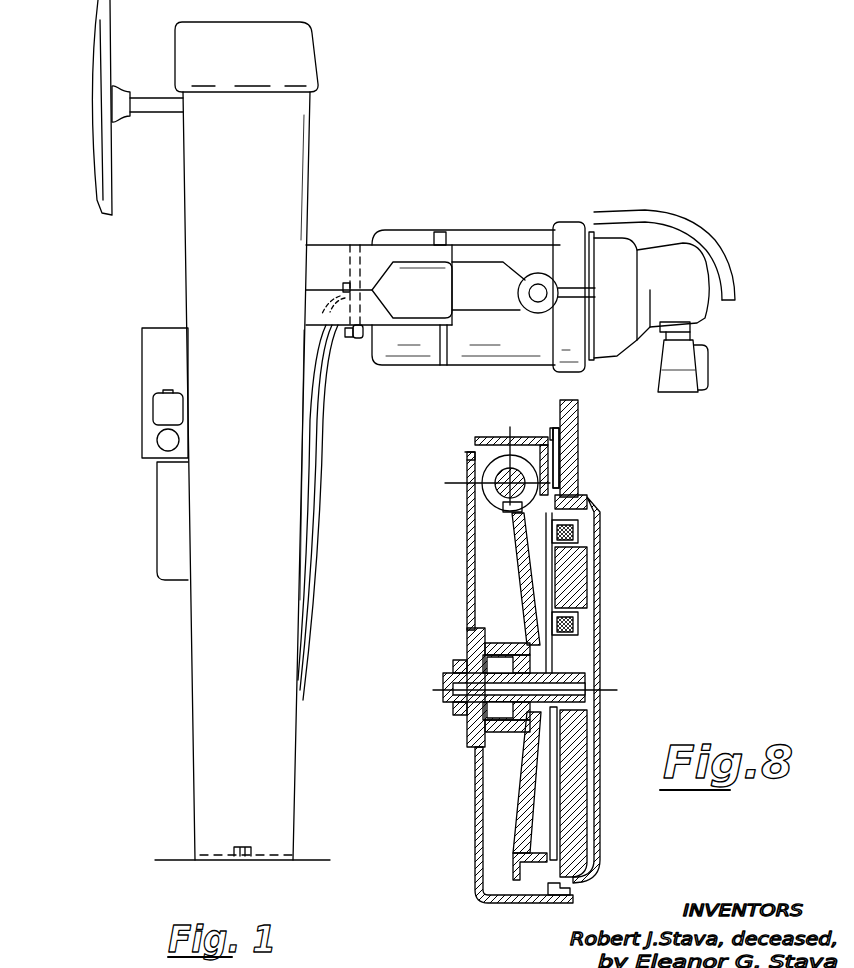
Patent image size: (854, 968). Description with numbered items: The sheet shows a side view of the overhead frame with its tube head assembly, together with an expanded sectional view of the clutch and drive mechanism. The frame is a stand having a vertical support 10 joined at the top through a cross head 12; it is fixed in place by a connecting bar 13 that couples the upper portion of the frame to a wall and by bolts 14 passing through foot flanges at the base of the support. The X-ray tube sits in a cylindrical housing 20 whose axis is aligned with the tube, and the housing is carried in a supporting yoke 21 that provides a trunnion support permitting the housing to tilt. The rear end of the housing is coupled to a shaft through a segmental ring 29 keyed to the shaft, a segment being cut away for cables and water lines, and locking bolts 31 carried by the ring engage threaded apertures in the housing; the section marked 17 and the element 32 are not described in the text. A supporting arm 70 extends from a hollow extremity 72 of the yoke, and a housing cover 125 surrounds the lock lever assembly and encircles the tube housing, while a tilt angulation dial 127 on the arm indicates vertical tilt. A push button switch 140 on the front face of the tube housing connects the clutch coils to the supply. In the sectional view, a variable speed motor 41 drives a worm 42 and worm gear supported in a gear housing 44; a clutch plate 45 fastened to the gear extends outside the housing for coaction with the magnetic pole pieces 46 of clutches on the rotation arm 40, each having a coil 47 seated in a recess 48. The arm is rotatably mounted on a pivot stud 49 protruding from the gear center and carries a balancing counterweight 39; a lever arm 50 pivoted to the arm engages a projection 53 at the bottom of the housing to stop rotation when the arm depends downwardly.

In FIG. 1, the vertical support 10 is at (205, 748).
In FIG. 1, the cross head 12 is at (295, 30).
In FIG. 1, the connecting bar 13 is at (148, 97).
In FIG. 1, the bolts 14 is at (245, 847).
In FIG. 1, the section line 17 is at (513, 297).
In FIG. 1, the cylindrical housing 20 is at (463, 345).
In FIG. 1, the supporting yoke 21 is at (320, 254).
In FIG. 1, the segmental ring 29 is at (353, 241).
In FIG. 1, the locking bolts 31 is at (353, 340).
In FIG. 1, the cable 32 is at (323, 421).
In FIG. 8, the balancing counterweight 39 is at (583, 826).
In FIG. 8, the rotation arm 40 is at (578, 413).
In FIG. 1, the variable speed motor 41 is at (164, 409).
In FIG. 8, the worm 42 is at (500, 511).
In FIG. 1, the housing 44 is at (160, 526).
In FIG. 8, the housing 44 is at (475, 803).
In FIG. 8, the clutch plate 45 is at (513, 575).
In FIG. 8, the magnetic pole pieces 46 is at (577, 513).
In FIG. 8, the coil 47 is at (573, 528).
In FIG. 8, the recess 48 is at (578, 542).
In FIG. 8, the pivot stud 49 is at (553, 432).
In FIG. 8, the lever arm 50 is at (559, 466).
In FIG. 8, the projection 53 is at (572, 893).
In FIG. 1, the supporting arm 70 is at (467, 271).
In FIG. 1, the hollow extremity 72 is at (443, 248).
In FIG. 1, the housing cover 125 is at (578, 232).
In FIG. 1, the tilt angulation dial 127 is at (568, 272).
In FIG. 1, the push button switch 140 is at (704, 318).